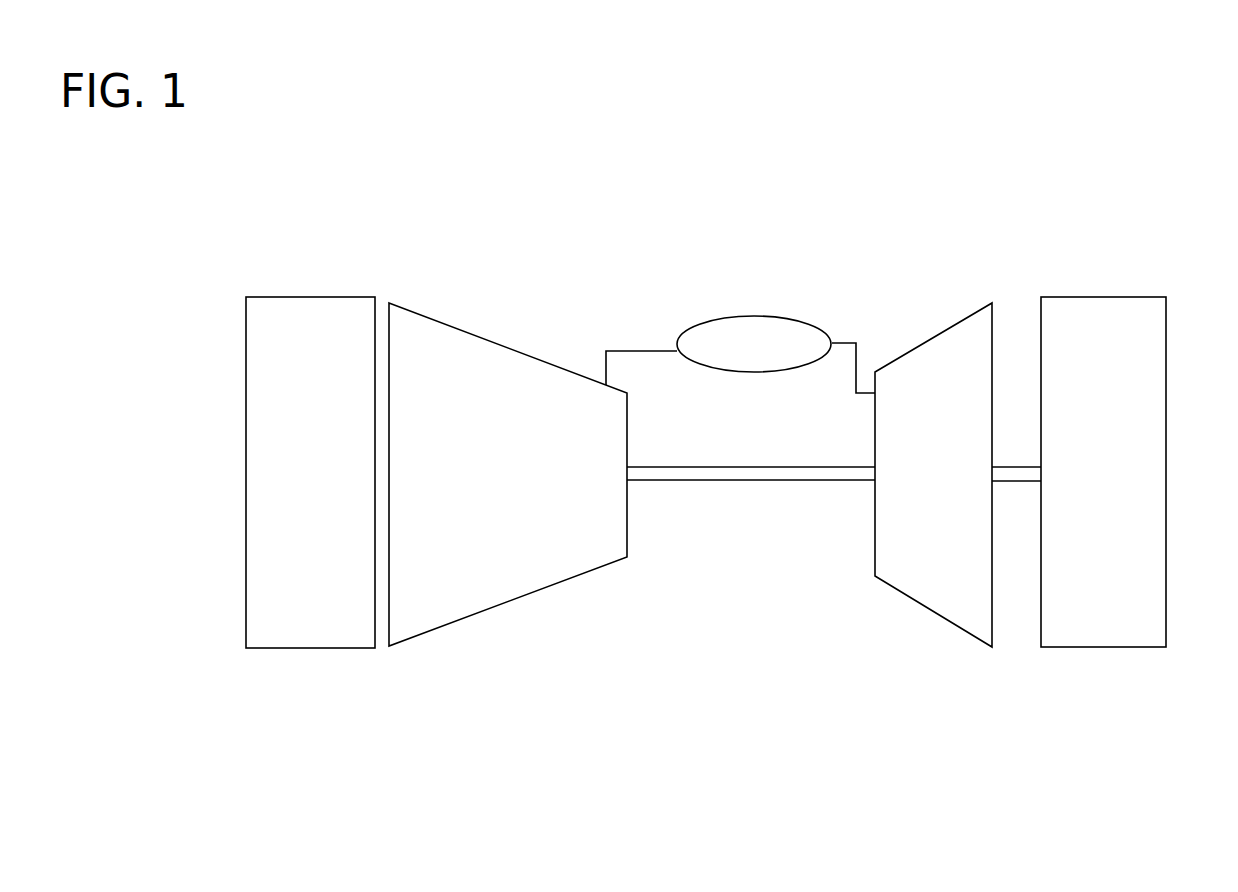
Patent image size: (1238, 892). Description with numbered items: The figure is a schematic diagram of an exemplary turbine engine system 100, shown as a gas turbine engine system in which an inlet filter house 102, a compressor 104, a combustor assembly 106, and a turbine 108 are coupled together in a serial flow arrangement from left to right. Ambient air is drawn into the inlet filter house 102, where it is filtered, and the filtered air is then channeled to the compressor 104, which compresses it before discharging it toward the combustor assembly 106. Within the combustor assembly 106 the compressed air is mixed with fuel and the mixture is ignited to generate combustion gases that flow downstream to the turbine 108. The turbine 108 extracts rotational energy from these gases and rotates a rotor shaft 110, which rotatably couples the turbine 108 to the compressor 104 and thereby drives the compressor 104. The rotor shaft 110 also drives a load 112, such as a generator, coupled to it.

The turbine engine system 100 is at (703, 732).
The inlet filter house 102 is at (334, 660).
The compressor 104 is at (504, 628).
The combustor assembly 106 is at (759, 381).
The turbine 108 is at (922, 621).
The rotor shaft 110 is at (735, 492).
The load 112 is at (1109, 654).